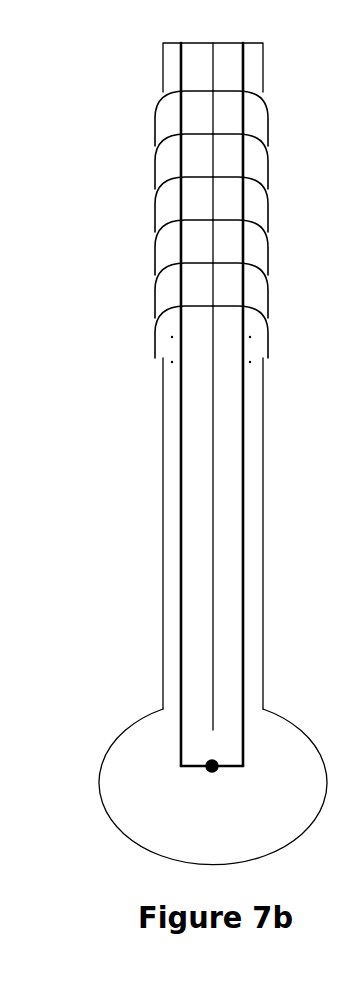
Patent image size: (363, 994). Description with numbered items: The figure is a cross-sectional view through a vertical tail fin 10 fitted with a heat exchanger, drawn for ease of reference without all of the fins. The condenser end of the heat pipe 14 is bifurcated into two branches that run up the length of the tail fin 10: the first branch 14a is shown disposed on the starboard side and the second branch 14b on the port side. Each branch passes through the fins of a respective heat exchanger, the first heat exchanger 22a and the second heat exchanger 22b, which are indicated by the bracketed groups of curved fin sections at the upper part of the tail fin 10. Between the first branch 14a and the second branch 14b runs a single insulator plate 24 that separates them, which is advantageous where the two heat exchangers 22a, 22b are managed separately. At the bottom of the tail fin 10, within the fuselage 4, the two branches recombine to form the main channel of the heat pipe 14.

The fuselage 4 is at (130, 720).
The tail fin 10 is at (162, 523).
The heat pipe 14 is at (215, 772).
The first branch 14a is at (181, 430).
The second branch 14b is at (243, 443).
The first heat exchanger 22a is at (135, 101).
The second heat exchanger 22b is at (285, 101).
The insulator plate 24 is at (213, 515).